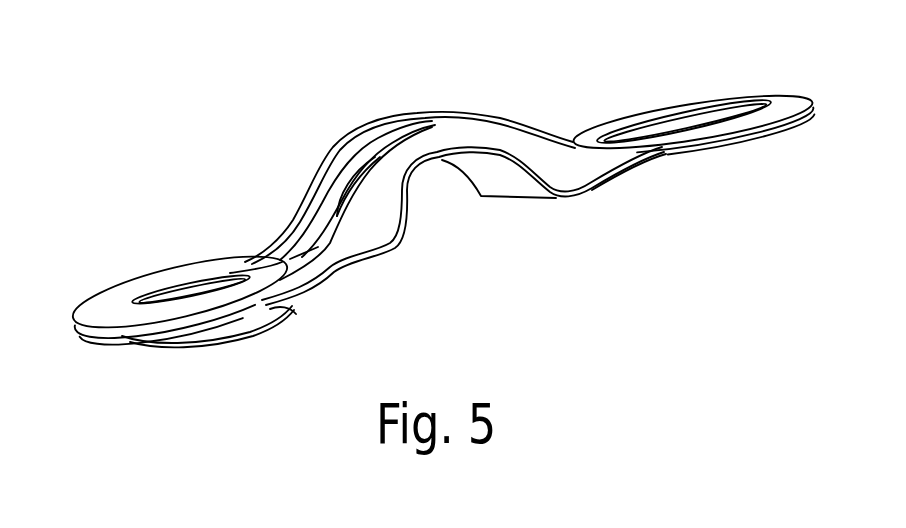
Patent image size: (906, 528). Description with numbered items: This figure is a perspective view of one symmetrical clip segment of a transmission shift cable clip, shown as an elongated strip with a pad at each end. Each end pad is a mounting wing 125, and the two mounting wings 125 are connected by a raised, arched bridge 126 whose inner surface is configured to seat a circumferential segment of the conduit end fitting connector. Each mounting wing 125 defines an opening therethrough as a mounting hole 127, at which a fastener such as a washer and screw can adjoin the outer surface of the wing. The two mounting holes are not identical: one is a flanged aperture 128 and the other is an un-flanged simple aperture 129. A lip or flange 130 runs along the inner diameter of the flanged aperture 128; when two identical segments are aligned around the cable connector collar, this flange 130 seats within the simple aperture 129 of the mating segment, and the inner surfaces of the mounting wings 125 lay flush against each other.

The mounting wing 125 is at (240, 252).
The bridge 126 is at (485, 132).
The mounting hole 127 is at (193, 292).
The flanged aperture 128 is at (140, 354).
The simple aperture 129 is at (662, 176).
The flange 130 is at (280, 309).